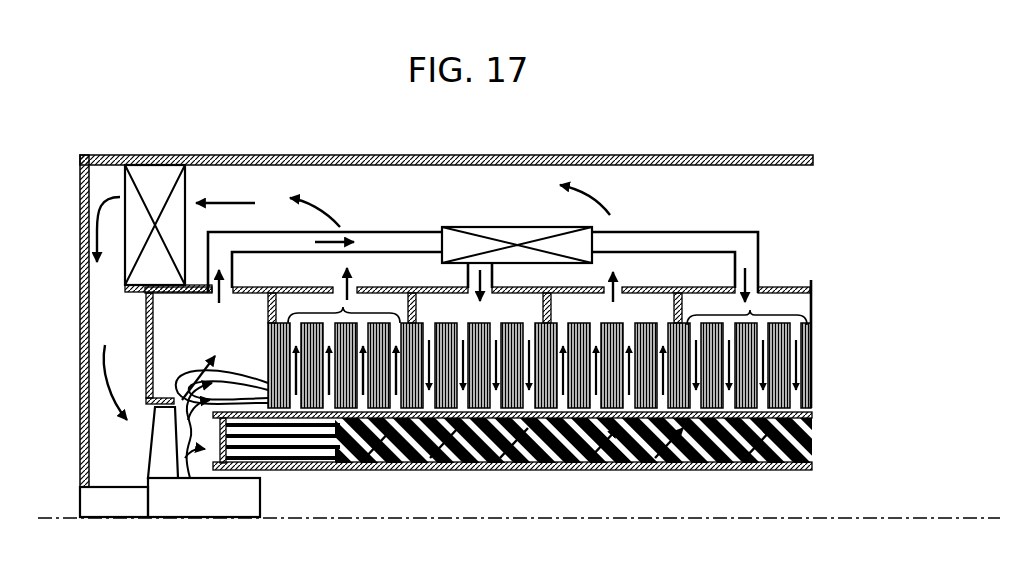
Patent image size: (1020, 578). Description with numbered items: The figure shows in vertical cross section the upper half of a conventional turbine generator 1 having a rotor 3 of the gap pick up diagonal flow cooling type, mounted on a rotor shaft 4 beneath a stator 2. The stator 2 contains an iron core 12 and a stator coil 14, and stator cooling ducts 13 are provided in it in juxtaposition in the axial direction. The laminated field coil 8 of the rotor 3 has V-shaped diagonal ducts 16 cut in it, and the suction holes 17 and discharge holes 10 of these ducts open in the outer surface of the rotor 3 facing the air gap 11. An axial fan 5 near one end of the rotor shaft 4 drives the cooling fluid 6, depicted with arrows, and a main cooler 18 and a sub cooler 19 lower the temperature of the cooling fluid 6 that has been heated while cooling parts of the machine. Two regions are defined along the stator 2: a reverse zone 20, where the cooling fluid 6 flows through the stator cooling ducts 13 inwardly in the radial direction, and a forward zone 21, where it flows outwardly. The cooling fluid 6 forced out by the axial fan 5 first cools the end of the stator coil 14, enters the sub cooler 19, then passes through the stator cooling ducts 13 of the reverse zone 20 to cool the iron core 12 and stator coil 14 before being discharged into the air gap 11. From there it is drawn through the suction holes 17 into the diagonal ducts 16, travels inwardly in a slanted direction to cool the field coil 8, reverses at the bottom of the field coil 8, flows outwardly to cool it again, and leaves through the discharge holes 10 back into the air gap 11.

The turbine generator 1 is at (122, 156).
The stator 2 is at (536, 350).
The rotor 3 is at (820, 418).
The rotor shaft 4 is at (313, 506).
The axial fan 5 is at (155, 448).
The cooling fluid 6 is at (190, 478).
The field coil 8 is at (407, 470).
The discharge holes 10 is at (613, 470).
The air gap 11 is at (803, 416).
The iron core 12 is at (270, 333).
The stator cooling ducts 13 is at (273, 368).
The stator coil 14 is at (184, 362).
The diagonal ducts 16 is at (766, 470).
The suction holes 17 is at (676, 470).
The main cooler 18 is at (152, 174).
The sub cooler 19 is at (518, 238).
The reverse zone 20 is at (752, 311).
The forward zone 21 is at (345, 304).